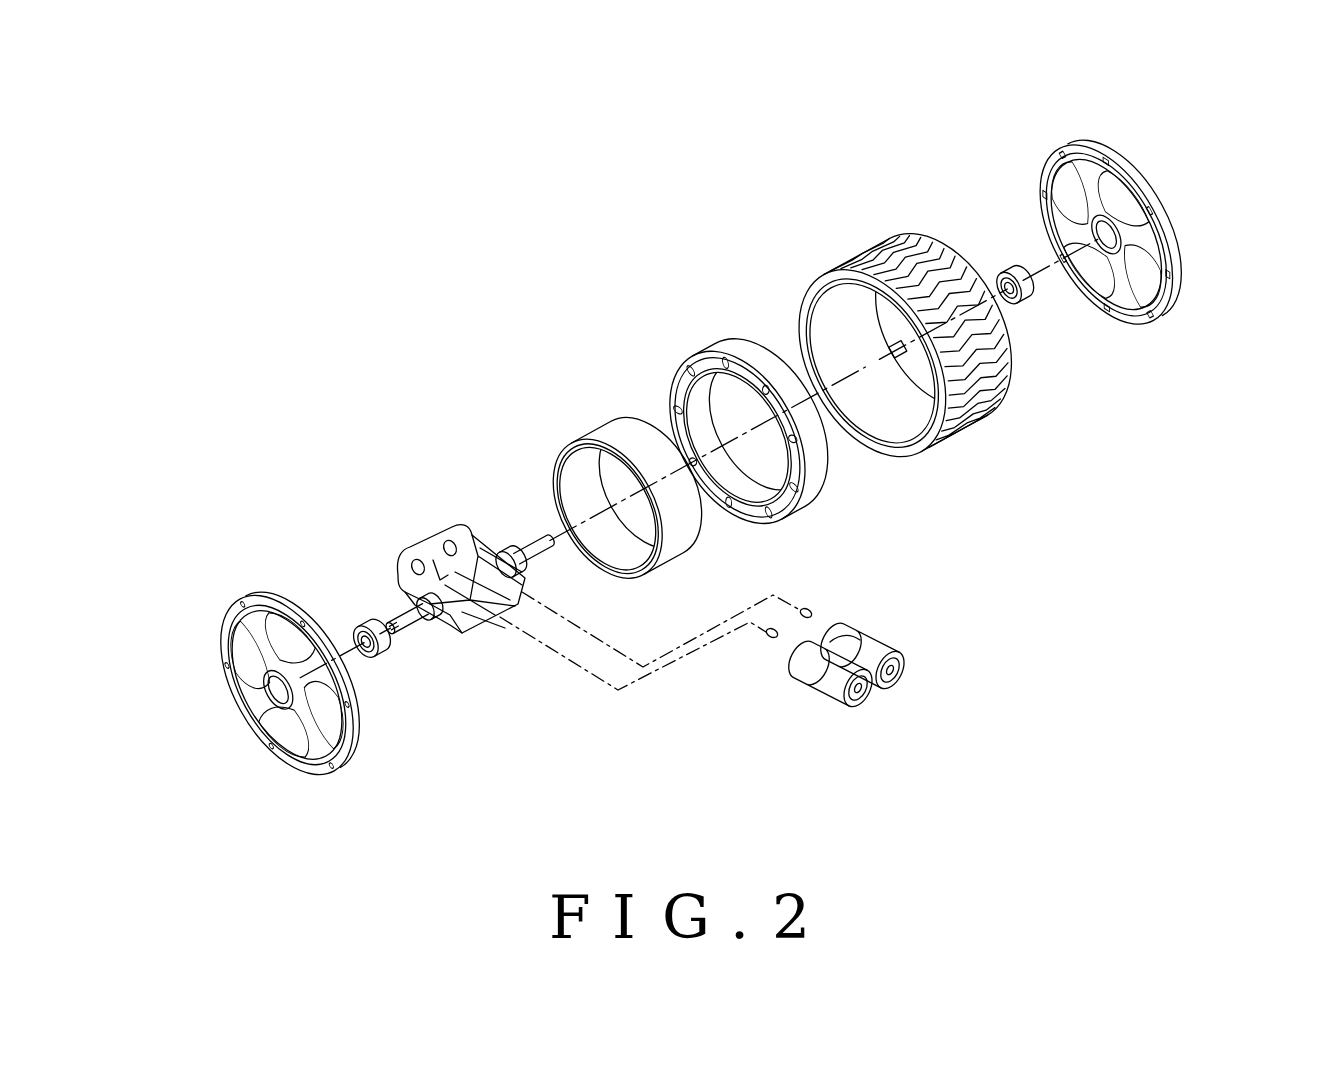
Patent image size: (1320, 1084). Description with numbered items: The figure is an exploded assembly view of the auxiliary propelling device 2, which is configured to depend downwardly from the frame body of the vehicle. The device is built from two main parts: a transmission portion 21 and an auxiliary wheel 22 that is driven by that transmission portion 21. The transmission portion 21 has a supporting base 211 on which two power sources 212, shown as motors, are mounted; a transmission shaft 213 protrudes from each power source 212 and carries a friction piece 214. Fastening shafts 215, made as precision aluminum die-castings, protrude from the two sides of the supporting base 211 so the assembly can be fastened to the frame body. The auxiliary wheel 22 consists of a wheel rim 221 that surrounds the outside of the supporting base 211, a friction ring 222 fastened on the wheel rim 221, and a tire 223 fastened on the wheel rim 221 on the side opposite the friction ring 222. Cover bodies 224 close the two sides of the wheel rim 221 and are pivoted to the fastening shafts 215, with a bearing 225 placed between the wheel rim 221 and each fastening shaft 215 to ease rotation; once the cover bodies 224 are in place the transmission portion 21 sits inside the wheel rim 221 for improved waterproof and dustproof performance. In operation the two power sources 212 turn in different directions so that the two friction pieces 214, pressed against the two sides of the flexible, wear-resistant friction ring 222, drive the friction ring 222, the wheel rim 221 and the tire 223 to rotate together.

The auxiliary propelling device 2 is at (340, 300).
The transmission portion 21 is at (835, 712).
The supporting base 211 is at (426, 536).
The power sources 212 is at (903, 668).
The transmission shaft 213 is at (818, 630).
The friction piece 214 is at (810, 610).
The fastening shafts 215 is at (420, 622).
The auxiliary wheel 22 is at (1020, 77).
The wheel rim 221 is at (815, 465).
The friction ring 222 is at (650, 570).
The tire 223 is at (1005, 390).
The cover bodies 224 is at (330, 760).
The bearing 225 is at (395, 648).